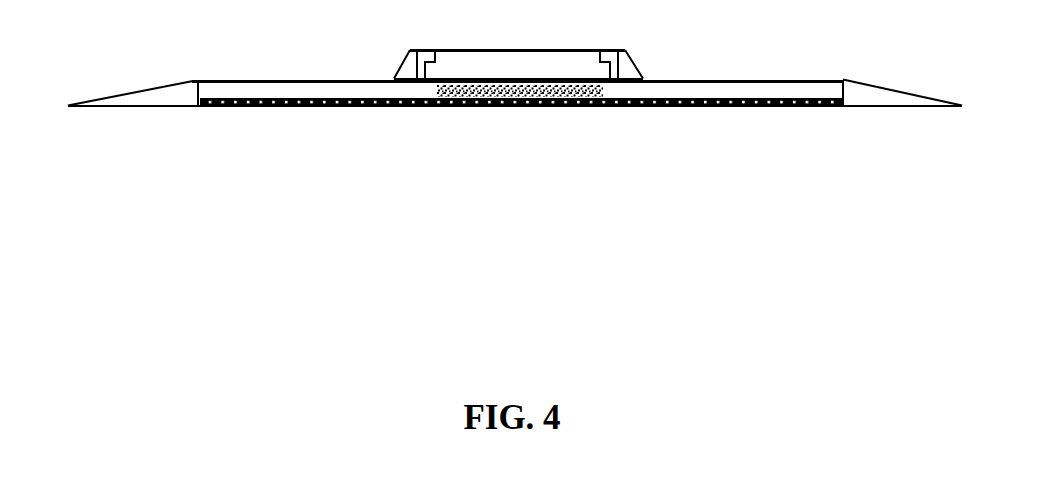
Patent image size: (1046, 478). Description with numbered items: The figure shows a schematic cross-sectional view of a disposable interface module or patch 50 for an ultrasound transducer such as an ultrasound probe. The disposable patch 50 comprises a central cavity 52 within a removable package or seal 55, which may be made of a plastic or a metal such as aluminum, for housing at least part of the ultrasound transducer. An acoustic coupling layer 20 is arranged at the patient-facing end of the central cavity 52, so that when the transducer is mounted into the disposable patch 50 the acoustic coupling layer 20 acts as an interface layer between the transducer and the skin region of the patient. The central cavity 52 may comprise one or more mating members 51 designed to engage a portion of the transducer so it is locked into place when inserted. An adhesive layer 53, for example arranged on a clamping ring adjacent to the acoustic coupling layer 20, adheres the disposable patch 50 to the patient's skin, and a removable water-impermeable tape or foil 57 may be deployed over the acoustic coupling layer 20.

The disposable patch 50 is at (503, 309).
The acoustic coupling layer 20 is at (513, 86).
The mating members 51 is at (416, 84).
The central cavity 52 is at (562, 72).
The adhesive layer 53 is at (307, 106).
The removable package or seal 55 is at (145, 106).
The removable water-impermeable tape or foil 57 is at (713, 106).